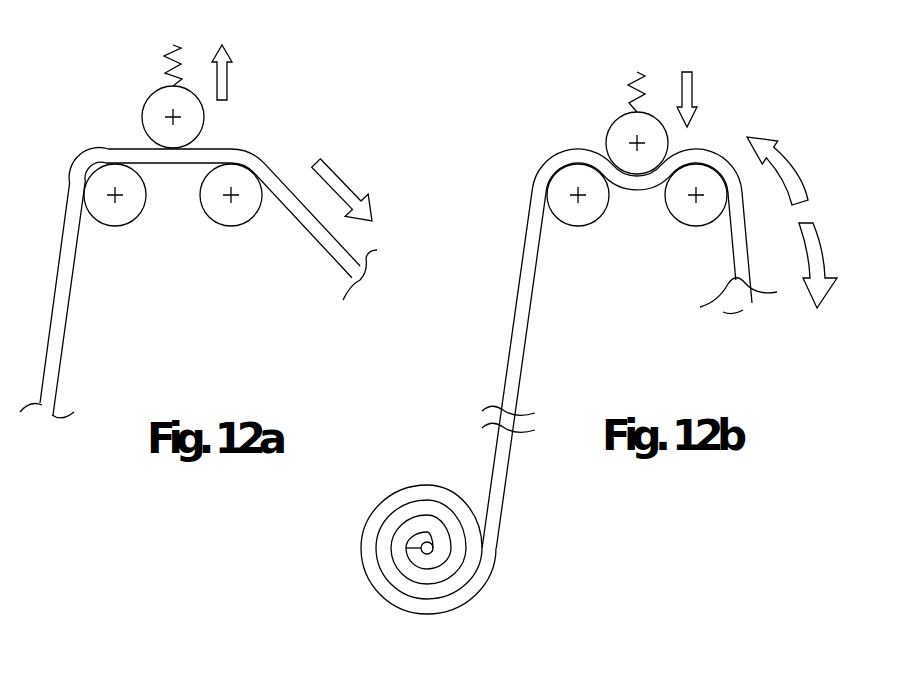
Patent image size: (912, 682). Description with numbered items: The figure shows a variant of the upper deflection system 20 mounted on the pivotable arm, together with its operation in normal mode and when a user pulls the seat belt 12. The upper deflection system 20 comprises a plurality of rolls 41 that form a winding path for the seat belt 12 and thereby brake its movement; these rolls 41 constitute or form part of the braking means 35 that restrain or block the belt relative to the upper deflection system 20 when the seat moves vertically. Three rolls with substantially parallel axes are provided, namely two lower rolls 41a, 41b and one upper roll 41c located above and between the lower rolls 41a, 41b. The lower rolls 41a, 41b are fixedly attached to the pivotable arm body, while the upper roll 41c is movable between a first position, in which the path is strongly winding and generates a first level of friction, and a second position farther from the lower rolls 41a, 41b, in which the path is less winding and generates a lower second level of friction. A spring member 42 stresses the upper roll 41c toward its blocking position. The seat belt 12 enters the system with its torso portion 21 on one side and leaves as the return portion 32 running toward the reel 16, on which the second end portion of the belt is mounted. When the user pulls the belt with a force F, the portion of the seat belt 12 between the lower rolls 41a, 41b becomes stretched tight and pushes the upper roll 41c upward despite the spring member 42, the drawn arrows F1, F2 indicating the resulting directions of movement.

In FIG. 12A, the seat belt 12 is at (71, 377).
In FIG. 12B, the seat belt 12 is at (534, 369).
In FIG. 12B, the reel 16 is at (398, 577).
In FIG. 12A, the upper deflection system 20 is at (233, 121).
In FIG. 12B, the upper deflection system 20 is at (708, 82).
In FIG. 12A, the torso portion 21 is at (340, 257).
In FIG. 12B, the torso portion 21 is at (743, 280).
In FIG. 12A, the return portion 32 is at (55, 338).
In FIG. 12B, the return portion 32 is at (522, 312).
In FIG. 12B, the braking means 35 is at (697, 139).
In FIG. 12A, the rolls 41 is at (179, 231).
In FIG. 12A, the lower roll 41a is at (123, 210).
In FIG. 12B, the lower roll 41a is at (568, 213).
In FIG. 12A, the lower roll 41b is at (220, 210).
In FIG. 12B, the lower roll 41b is at (682, 210).
In FIG. 12A, the upper roll 41c is at (159, 109).
In FIG. 12B, the upper roll 41c is at (627, 137).
In FIG. 12A, the spring member 42 is at (158, 58).
In FIG. 12B, the spring member 42 is at (627, 88).
In FIG. 12A, the force F is at (337, 182).
In FIG. 12B, the force direction 1 F1 is at (813, 237).
In FIG. 12B, the force direction 2 F2 is at (782, 172).